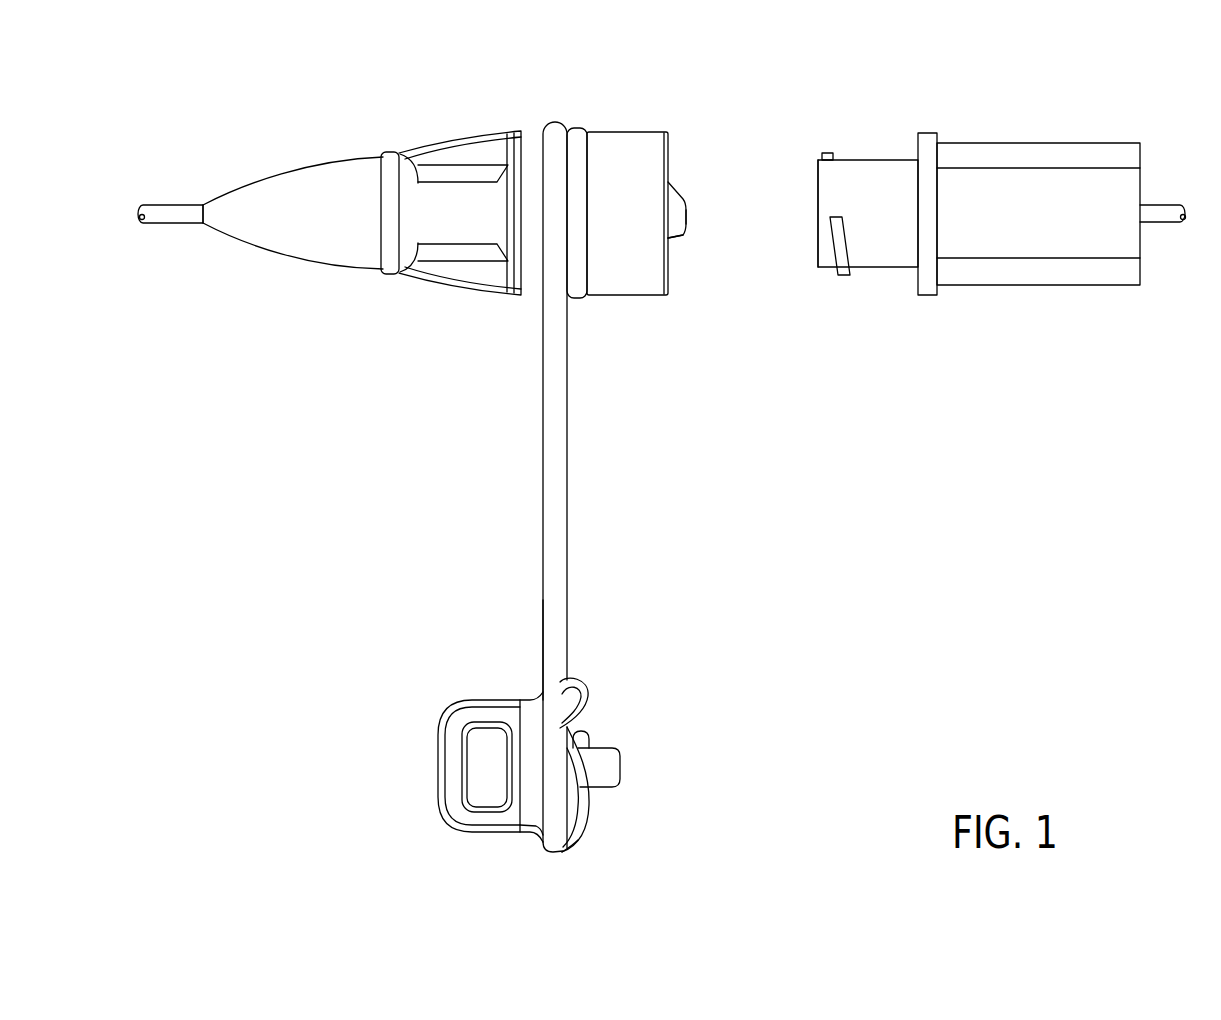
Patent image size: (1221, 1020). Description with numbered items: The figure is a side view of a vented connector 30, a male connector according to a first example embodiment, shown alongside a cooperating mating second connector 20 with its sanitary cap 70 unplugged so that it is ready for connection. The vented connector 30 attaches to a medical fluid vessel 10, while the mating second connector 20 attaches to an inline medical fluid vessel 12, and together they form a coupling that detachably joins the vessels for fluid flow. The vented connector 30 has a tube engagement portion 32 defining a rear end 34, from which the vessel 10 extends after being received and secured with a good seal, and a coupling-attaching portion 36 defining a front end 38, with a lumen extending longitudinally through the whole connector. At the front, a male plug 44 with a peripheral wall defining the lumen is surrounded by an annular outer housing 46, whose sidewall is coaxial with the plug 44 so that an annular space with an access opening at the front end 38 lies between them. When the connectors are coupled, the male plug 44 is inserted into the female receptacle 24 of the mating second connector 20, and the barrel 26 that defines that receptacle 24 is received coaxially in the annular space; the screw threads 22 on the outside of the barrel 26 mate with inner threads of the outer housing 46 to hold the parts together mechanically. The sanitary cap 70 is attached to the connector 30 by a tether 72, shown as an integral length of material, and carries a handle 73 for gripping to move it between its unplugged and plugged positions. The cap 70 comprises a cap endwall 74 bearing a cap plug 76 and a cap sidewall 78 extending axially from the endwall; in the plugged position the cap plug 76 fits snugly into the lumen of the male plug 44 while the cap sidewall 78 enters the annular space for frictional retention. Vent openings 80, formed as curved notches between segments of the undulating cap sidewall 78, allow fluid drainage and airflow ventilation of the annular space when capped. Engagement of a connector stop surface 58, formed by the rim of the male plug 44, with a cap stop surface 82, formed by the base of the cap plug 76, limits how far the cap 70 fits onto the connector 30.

The medical fluid vessel 10 is at (164, 266).
The inline medical fluid vessel 12 is at (1178, 264).
The mating second connector 20 is at (1029, 281).
The screw threads 22 is at (865, 298).
The female receptacle 24 is at (808, 228).
The barrel 26 is at (868, 162).
The vented connector 30 is at (301, 269).
The tube engagement portion 32 is at (293, 135).
The rear end 34 is at (182, 158).
The coupling-attaching portion 36 is at (515, 155).
The front end 38 is at (699, 162).
The male plug 44 is at (692, 234).
The outer housing 46 is at (624, 165).
The connector stop surface 58 is at (590, 738).
The sanitary cap 70 is at (613, 636).
The tether 72 is at (608, 485).
The handle 73 is at (455, 800).
The cap endwall 74 is at (511, 891).
The cap plug 76 is at (654, 780).
The cap sidewall 78 is at (586, 690).
The vent openings 80 is at (623, 757).
The cap stop surface 82 is at (688, 200).